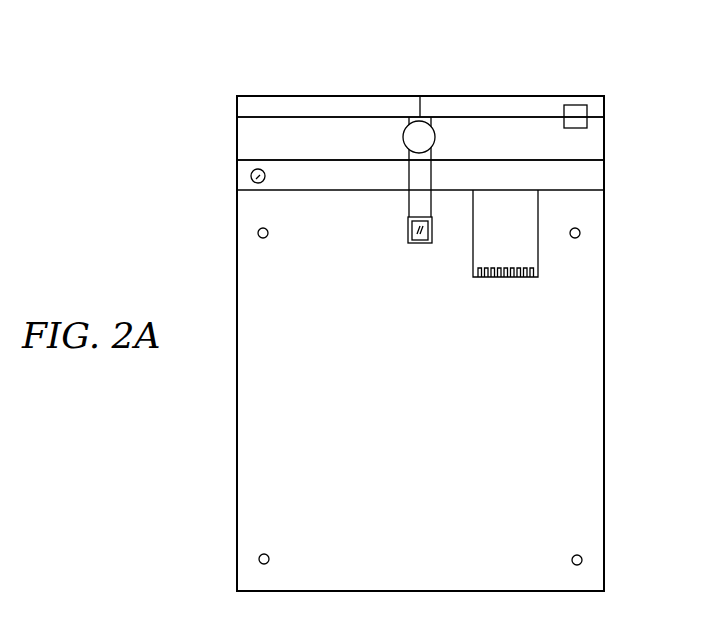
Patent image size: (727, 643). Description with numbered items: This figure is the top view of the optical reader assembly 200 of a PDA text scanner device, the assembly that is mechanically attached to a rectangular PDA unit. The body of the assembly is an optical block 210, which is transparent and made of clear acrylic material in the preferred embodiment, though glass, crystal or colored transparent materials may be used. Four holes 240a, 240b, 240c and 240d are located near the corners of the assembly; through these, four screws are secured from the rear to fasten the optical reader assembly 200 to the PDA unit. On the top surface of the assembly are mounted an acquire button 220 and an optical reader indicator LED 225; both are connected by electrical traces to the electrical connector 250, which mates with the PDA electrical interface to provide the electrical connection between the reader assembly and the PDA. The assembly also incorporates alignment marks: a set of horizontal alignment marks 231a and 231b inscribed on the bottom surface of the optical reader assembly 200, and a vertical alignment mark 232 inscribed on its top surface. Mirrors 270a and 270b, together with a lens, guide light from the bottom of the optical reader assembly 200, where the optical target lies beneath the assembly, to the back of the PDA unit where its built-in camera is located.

The optical reader assembly 200 is at (237, 398).
The optical block 210 is at (604, 140).
The acquire button 220 is at (575, 104).
The optical reader indicator LED 225 is at (251, 177).
The horizontal alignment mark 231a is at (283, 116).
The horizontal alignment mark 231b is at (287, 160).
The vertical alignment mark 232 is at (421, 108).
The hole 240a is at (258, 233).
The hole 240b is at (580, 233).
The hole 240c is at (582, 560).
The hole 240d is at (259, 559).
The electrical connector 250 is at (505, 278).
The mirror 270a is at (406, 128).
The mirror 270b is at (420, 244).